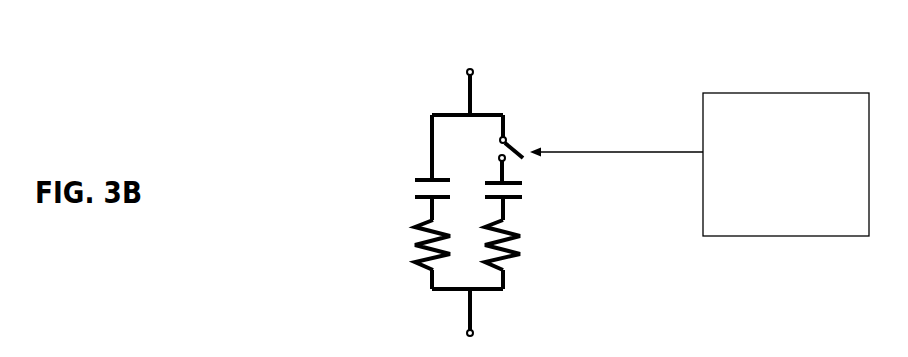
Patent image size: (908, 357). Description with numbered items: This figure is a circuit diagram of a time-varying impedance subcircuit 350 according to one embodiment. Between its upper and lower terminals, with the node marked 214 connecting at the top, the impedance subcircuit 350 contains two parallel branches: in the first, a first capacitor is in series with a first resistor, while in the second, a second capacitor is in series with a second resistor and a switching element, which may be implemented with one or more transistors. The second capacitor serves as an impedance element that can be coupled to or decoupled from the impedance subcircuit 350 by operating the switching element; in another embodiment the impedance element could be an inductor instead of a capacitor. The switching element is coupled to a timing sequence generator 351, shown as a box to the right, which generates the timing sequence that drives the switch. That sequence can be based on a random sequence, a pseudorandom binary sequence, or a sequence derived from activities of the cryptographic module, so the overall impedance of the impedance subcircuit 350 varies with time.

The input node / terminal of RC network 214 is at (425, 168).
The impedance subcircuit 350 is at (615, 84).
The timing sequence generator 351 is at (767, 224).